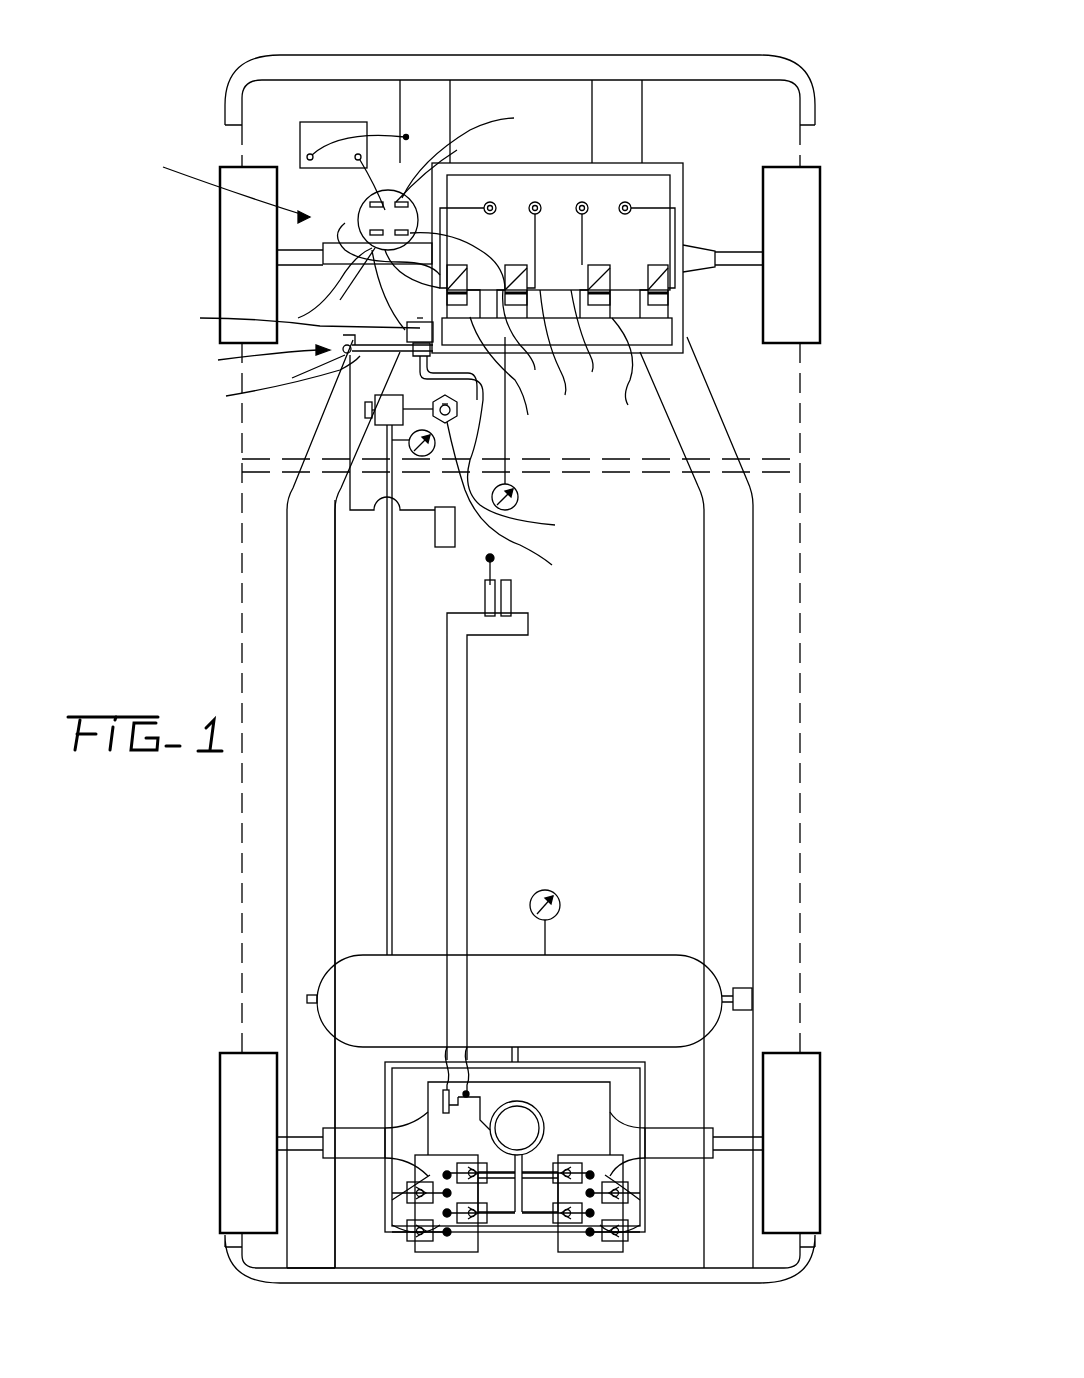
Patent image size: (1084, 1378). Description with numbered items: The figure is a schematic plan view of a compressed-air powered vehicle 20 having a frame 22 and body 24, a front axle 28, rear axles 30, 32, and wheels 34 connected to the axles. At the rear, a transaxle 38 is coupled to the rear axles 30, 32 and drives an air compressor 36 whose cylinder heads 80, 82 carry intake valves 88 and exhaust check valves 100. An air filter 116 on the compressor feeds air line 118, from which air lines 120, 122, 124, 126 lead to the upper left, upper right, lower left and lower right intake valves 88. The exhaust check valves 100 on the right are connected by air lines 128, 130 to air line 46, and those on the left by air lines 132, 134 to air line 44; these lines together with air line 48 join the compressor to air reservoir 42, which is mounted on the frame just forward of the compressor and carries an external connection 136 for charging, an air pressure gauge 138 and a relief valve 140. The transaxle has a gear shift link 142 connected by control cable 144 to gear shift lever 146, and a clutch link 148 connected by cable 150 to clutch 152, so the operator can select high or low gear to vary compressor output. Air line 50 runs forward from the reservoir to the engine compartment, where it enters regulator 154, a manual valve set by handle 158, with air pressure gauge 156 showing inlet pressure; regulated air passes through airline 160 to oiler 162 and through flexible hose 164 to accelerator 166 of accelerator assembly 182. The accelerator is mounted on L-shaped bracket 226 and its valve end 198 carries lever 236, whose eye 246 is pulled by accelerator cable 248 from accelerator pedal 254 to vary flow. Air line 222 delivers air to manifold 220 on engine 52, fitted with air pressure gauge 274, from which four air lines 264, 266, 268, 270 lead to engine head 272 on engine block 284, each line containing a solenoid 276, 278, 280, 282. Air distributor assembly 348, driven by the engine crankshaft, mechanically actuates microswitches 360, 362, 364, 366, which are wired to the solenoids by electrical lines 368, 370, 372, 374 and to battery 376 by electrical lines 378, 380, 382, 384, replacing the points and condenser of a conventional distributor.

The vehicle 20 is at (850, 360).
The frame 22 is at (270, 640).
The body 24 is at (242, 548).
The front axle 28 is at (742, 252).
The rear axle 30 is at (310, 1135).
The rear axle 32 is at (718, 1138).
The wheels 34 is at (228, 258).
The air compressor 36 is at (330, 1240).
The transaxle 38 is at (660, 1108).
The air reservoir 42 is at (585, 1012).
The air line 44 is at (385, 1080).
The air line 46 is at (640, 1068).
The air line 48 is at (512, 1052).
The air line 50 is at (387, 790).
The engine 52 is at (635, 120).
The head 80 is at (462, 1252).
The head 82 is at (570, 1252).
The intake valve 88 is at (535, 1178).
The exhaust check valve 100 is at (440, 1230).
The air filter 116 is at (544, 1122).
The air line 118 is at (525, 1148).
The air line 120 is at (492, 1160).
The air line 122 is at (540, 1160).
The air line 124 is at (487, 1215).
The air line 126 is at (530, 1210).
The air line 128 is at (635, 1195).
The air line 130 is at (632, 1238).
The air line 132 is at (400, 1197).
The air line 134 is at (395, 1240).
The external connection 136 is at (307, 999).
The air pressure gauge 138 is at (555, 892).
The relief valve 140 is at (752, 998).
The gear shift link 142 is at (445, 1110).
The control cable 144 is at (447, 740).
The gear shift lever 146 is at (478, 572).
The clutch link 148 is at (475, 1100).
The cable 150 is at (467, 738).
The clutch 152 is at (511, 598).
The regulator 154 is at (433, 410).
The air pressure gauge 156 is at (410, 450).
The handle 158 is at (365, 412).
The airline 160 is at (375, 398).
The oiler 162 is at (519, 500).
The flexible hose 164 is at (533, 469).
The accelerator 166 is at (407, 330).
The accelerator assembly 182 is at (256, 358).
The accelerator valve end 198 is at (415, 368).
The manifold 220 is at (660, 330).
The air line 222 is at (505, 430).
The L-shaped bracket 226 is at (355, 340).
The lever 236 is at (272, 381).
The eye 246 is at (299, 371).
The accelerator cable 248 is at (352, 520).
The accelerator pedal 254 is at (440, 533).
The air line 264 is at (511, 373).
The air line 266 is at (566, 349).
The air line 268 is at (631, 370).
The air line 270 is at (655, 318).
The engine head 272 is at (545, 190).
The air pressure gauge 274 is at (518, 493).
The solenoid 276 is at (496, 215).
The solenoid 278 is at (570, 160).
The solenoid 280 is at (625, 230).
The solenoid 282 is at (605, 275).
The engine block 284 is at (680, 180).
The air distributor assembly 348 is at (280, 214).
The microswitch 360 is at (358, 204).
The microswitch 362 is at (412, 269).
The microswitch 364 is at (420, 200).
The microswitch 366 is at (446, 165).
The electrical line 368 is at (362, 287).
The electrical line 370 is at (356, 337).
The electrical line 372 is at (596, 338).
The electrical line 374 is at (548, 205).
The battery 376 is at (315, 118).
The electrical line 378 is at (378, 200).
The electrical line 380 is at (372, 232).
The electrical line 382 is at (477, 147).
The electrical line 384 is at (420, 150).